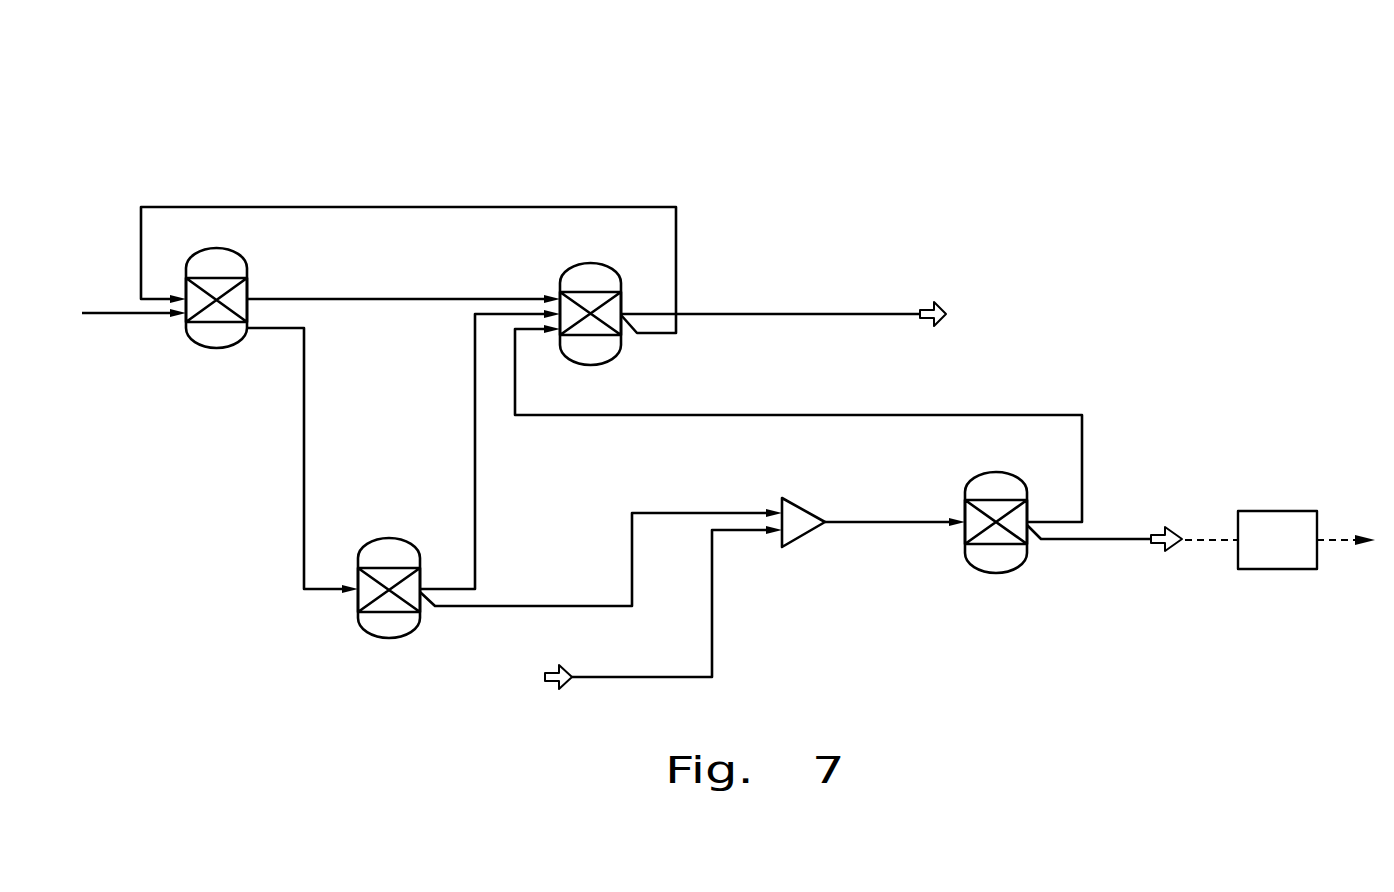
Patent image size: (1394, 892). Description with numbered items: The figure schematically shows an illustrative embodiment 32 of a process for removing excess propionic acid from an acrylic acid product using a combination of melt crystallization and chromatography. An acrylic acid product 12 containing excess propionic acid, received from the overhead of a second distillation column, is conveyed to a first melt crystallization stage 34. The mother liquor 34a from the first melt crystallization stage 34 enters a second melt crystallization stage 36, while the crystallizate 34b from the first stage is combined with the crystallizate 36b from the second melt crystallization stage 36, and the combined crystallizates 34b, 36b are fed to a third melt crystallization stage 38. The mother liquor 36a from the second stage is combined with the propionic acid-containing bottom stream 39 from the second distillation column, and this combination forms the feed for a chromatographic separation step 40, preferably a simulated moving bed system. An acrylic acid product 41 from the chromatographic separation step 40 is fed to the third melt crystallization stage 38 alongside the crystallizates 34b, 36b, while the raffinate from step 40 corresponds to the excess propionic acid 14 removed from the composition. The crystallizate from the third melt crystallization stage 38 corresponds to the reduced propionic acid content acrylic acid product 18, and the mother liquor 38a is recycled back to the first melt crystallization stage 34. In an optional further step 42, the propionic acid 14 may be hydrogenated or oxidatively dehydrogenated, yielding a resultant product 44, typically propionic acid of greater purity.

The acrylic acid product 12 is at (133, 314).
The excess propionic acid 14 is at (1145, 540).
The reduced propionic acid content acrylic acid product 18 is at (857, 313).
The illustrative embodiment 32 is at (1060, 269).
The first melt crystallization stage 34 is at (222, 348).
The mother liquor 34a is at (304, 478).
The crystallizate 34b is at (376, 298).
The second melt crystallization stage 36 is at (388, 638).
The mother liquor 36a is at (527, 606).
The crystallizate 36b is at (475, 484).
The third melt crystallization stage 38 is at (603, 365).
The mother liquor 38a is at (367, 207).
The propionic acid-containing bottom stream 39 is at (712, 615).
The chromatographic separation step 40 is at (995, 573).
The acrylic acid product 41 is at (1082, 448).
The optional further step 42 is at (1277, 569).
The resultant product 44 is at (1345, 532).